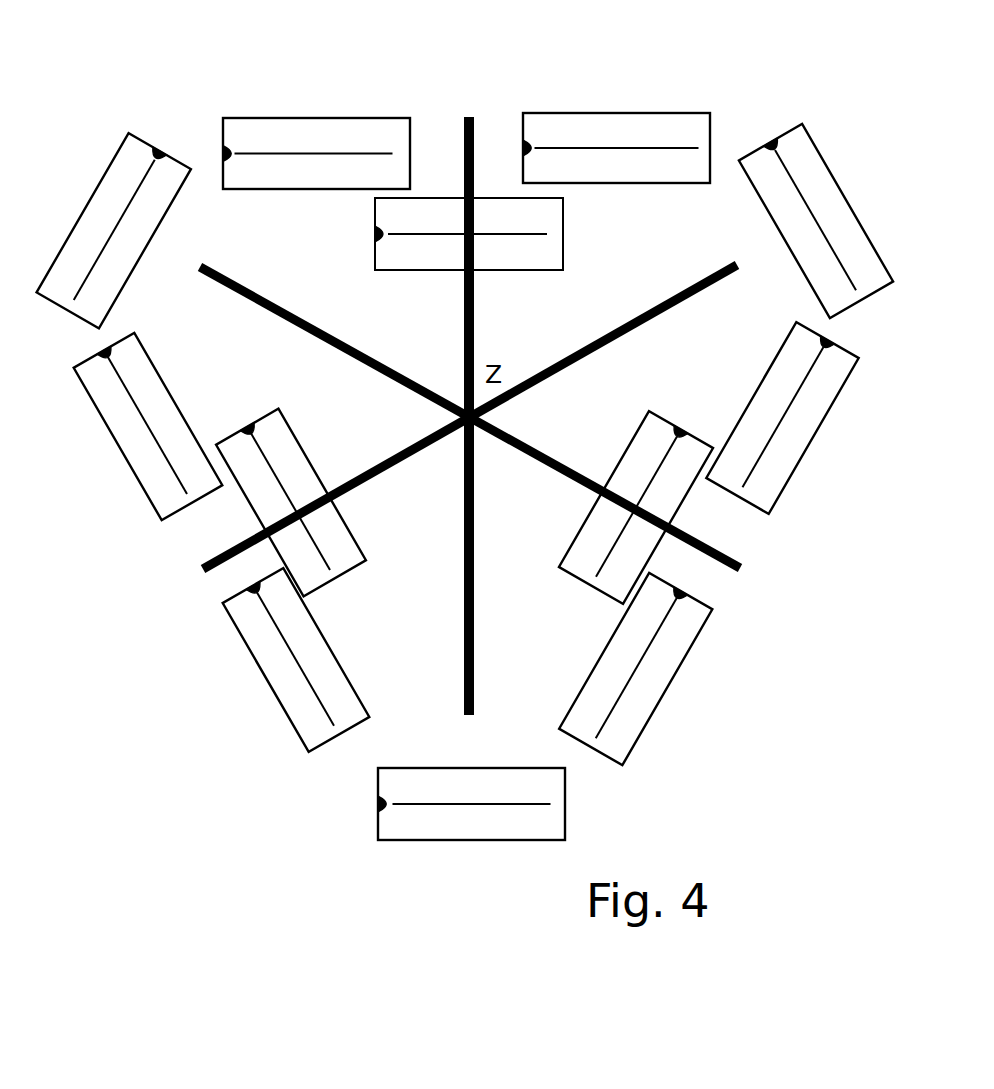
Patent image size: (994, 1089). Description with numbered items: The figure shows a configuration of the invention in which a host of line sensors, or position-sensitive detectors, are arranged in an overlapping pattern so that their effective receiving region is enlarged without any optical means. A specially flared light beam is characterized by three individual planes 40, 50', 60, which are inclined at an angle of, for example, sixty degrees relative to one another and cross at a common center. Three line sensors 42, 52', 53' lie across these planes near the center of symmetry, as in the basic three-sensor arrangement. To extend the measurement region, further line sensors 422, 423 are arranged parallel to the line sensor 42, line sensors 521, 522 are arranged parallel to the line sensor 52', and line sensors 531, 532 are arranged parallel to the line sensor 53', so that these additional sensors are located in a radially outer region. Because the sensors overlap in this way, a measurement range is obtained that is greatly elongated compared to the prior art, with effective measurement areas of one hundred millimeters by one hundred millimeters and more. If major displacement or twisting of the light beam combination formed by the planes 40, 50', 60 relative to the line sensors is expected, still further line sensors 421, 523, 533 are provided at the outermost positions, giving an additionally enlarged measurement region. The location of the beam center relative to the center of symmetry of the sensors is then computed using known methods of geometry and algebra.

The light beam plane 40 is at (478, 306).
The line sensor 42 is at (566, 240).
The line sensor 421 is at (128, 133).
The line sensor 422 is at (322, 117).
The line sensor 423 is at (626, 112).
The light beam plane 50' is at (470, 417).
The light beam plane 60 is at (624, 346).
The line sensor 52' is at (316, 503).
The line sensor 53' is at (609, 507).
The line sensor 521 is at (143, 485).
The line sensor 522 is at (276, 689).
The line sensor 523 is at (456, 842).
The line sensor 531 is at (672, 692).
The line sensor 532 is at (797, 465).
The line sensor 533 is at (823, 162).